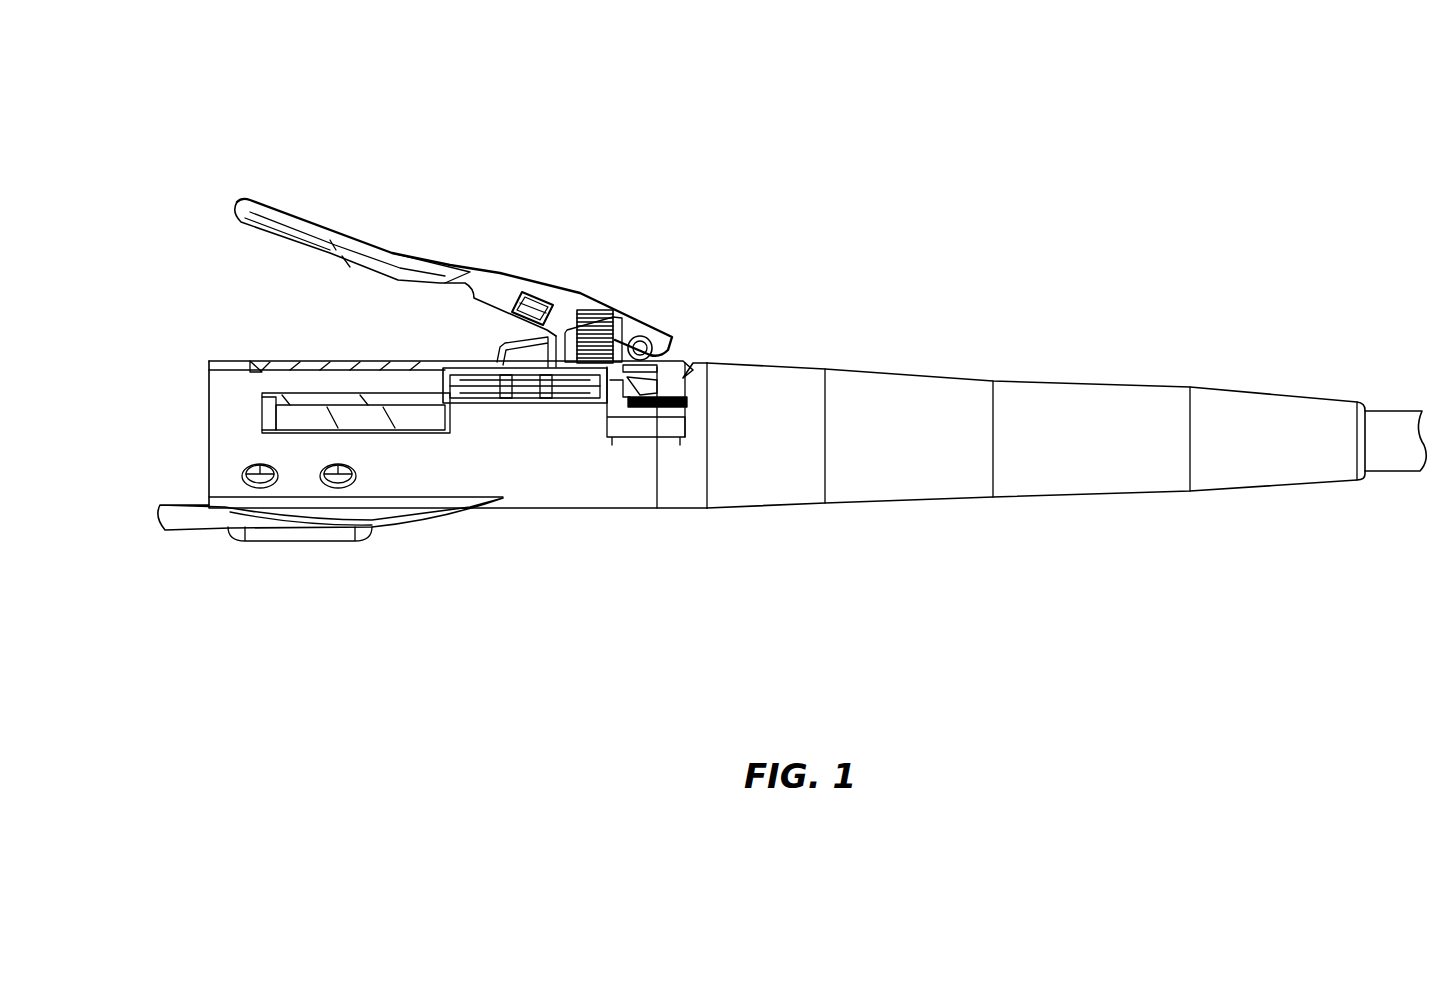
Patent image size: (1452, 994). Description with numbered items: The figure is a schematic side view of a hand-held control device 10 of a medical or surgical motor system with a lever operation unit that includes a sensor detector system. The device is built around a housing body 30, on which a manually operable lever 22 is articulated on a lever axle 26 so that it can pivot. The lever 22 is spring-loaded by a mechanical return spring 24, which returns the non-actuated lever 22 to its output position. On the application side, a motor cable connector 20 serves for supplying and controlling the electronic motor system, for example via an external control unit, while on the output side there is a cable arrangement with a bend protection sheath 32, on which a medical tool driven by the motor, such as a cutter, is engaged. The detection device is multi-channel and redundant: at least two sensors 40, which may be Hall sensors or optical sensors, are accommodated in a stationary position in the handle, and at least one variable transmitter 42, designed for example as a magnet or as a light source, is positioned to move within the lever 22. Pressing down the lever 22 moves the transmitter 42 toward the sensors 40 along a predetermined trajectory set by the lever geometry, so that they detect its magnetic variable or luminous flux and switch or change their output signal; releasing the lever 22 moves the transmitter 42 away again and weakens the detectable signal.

The hand-held control device 10 is at (793, 267).
The motor cable connector 20 is at (207, 373).
The lever 22 is at (290, 216).
The return spring 24 is at (600, 317).
The lever axle 26 is at (642, 347).
The housing body 30 is at (537, 510).
The bend protection sheath 32 is at (857, 370).
The sensors 40 is at (517, 385).
The transmitter 42 is at (532, 303).